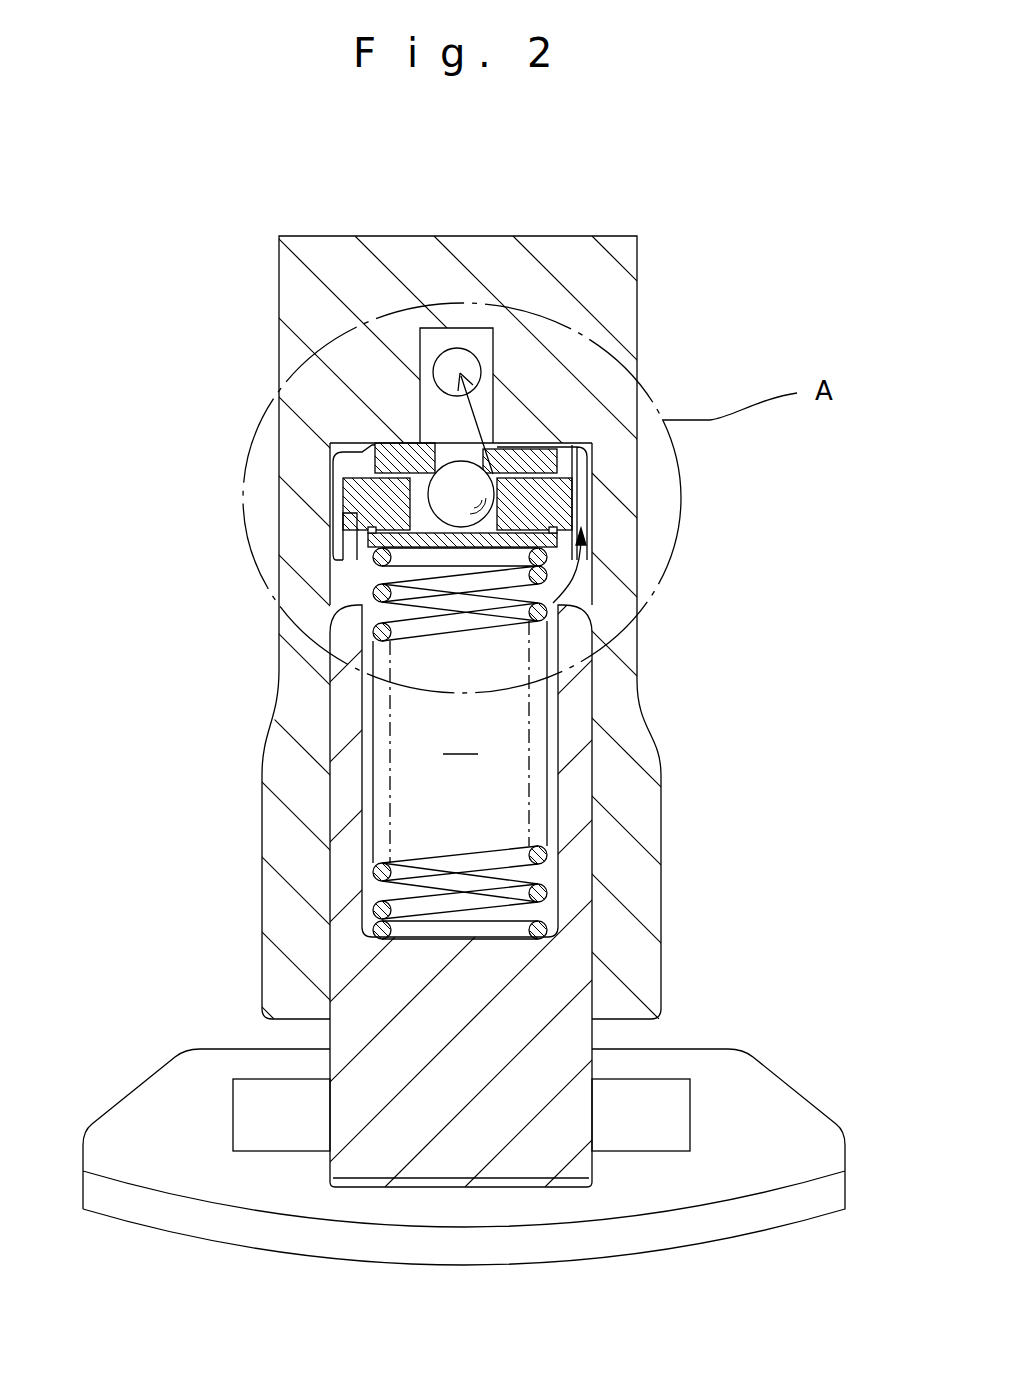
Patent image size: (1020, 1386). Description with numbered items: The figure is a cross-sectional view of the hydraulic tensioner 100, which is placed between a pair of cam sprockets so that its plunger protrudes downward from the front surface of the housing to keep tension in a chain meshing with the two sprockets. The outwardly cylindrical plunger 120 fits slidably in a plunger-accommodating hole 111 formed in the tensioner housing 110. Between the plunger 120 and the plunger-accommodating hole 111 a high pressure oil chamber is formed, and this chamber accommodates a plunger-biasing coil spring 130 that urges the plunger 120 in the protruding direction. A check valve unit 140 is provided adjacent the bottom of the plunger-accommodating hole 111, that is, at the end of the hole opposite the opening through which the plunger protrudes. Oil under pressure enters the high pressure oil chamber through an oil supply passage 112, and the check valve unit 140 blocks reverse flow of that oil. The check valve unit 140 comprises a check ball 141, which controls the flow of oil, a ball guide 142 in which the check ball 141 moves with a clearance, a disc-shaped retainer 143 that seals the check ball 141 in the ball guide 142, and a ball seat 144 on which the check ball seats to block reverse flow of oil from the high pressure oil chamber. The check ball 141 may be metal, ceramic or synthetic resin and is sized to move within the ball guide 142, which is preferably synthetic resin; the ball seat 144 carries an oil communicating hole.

The hydraulic tensioner 100 is at (732, 287).
The tensioner housing 110 is at (645, 977).
The plunger-accommodating hole 111 is at (590, 681).
The oil supply passage 112 is at (455, 333).
The plunger 120 is at (465, 1015).
The plunger-biasing coil spring 130 is at (547, 587).
The check valve unit 140 is at (312, 467).
The check ball 141 is at (403, 450).
The ball guide 142 is at (372, 498).
The disc-shaped retainer 143 is at (352, 507).
The ball seat 144 is at (383, 442).